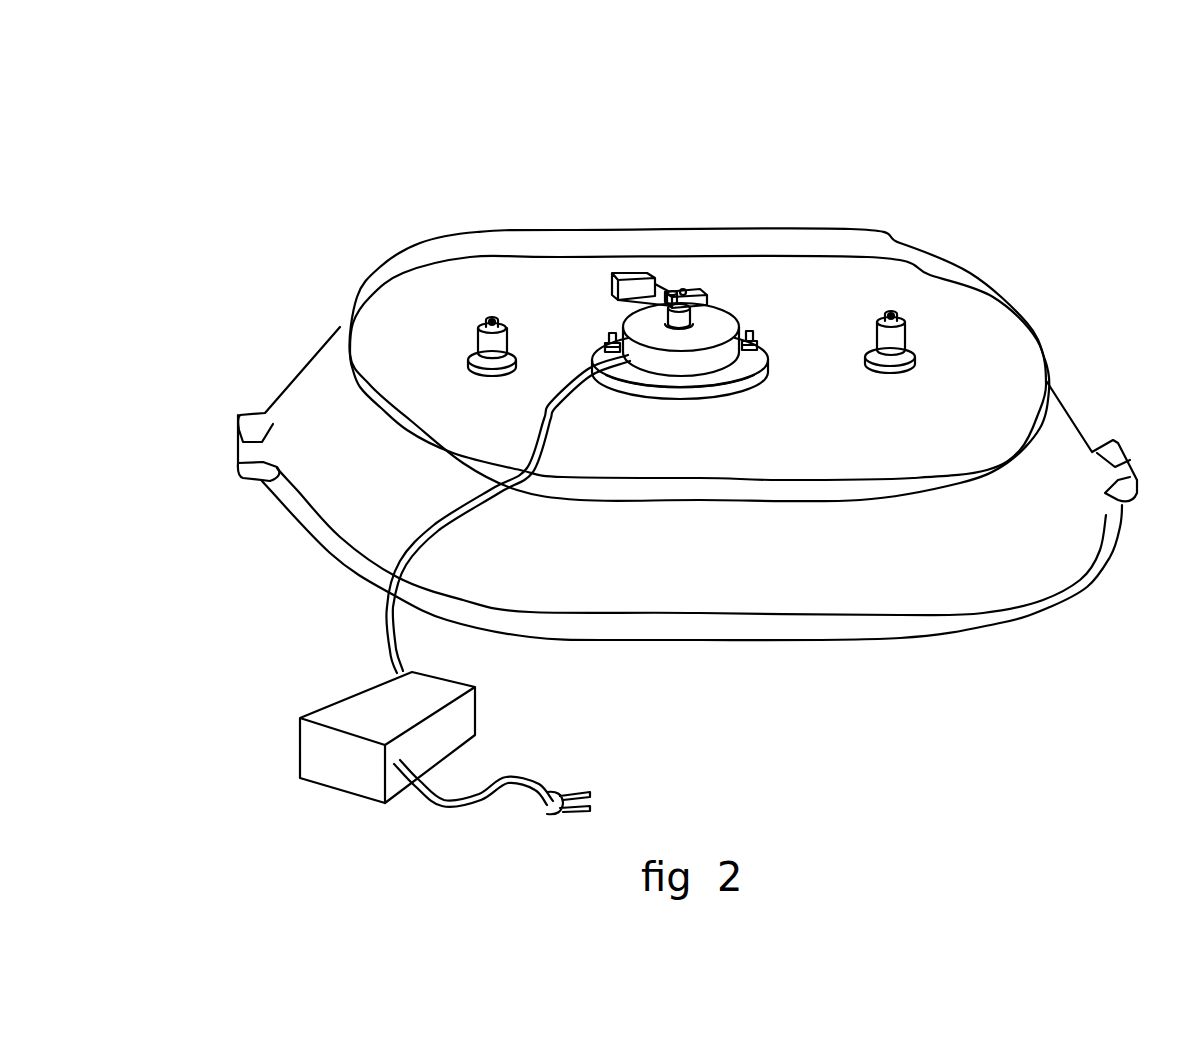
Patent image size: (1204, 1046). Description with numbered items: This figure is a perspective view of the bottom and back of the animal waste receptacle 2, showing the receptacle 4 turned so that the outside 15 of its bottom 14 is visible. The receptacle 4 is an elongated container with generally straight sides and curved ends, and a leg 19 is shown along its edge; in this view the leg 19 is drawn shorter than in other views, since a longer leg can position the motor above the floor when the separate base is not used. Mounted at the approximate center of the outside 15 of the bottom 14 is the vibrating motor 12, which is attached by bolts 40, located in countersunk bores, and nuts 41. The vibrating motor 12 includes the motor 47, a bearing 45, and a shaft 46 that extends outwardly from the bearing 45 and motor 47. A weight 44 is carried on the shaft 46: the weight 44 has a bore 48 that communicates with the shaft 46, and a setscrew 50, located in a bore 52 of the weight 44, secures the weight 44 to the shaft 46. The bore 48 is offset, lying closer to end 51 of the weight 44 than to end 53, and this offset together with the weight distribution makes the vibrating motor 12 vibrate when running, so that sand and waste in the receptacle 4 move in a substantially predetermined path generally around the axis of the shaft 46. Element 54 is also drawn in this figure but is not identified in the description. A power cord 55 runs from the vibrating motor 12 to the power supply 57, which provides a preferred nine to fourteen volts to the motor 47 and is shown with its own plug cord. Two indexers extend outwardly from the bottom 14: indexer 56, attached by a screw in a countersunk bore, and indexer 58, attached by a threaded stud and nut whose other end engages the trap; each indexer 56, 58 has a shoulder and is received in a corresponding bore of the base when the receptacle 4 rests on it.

The animal waste receptacle 2 is at (516, 198).
The receptacle 4 is at (312, 390).
The vibrating motor 12 is at (782, 250).
The bottom 14 is at (561, 272).
The outside 15 is at (680, 290).
The leg 19 is at (990, 468).
The bolts 40 is at (609, 335).
The nuts 41 is at (604, 344).
The weight 44 is at (638, 238).
The bearing 45 is at (686, 314).
The shaft 46 is at (688, 313).
The motor 47 is at (643, 360).
The bore 48 is at (690, 294).
The setscrew 50 is at (667, 305).
The end 51 is at (700, 304).
The bore 52 is at (690, 313).
The end 53 is at (625, 286).
The stop 54 is at (712, 298).
The power cord 55 is at (445, 520).
The indexer 56 is at (470, 367).
The power supply 57 is at (335, 755).
The indexer 58 is at (908, 335).